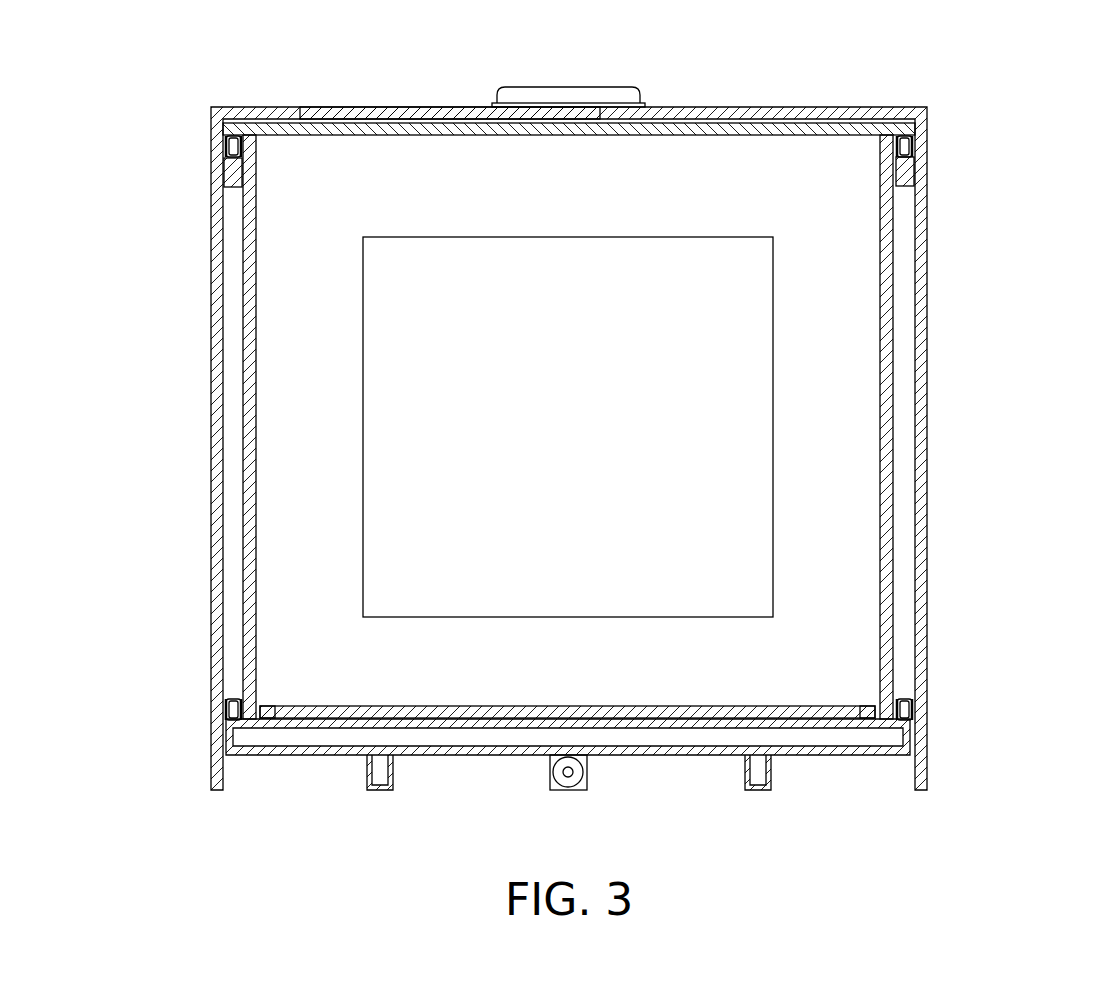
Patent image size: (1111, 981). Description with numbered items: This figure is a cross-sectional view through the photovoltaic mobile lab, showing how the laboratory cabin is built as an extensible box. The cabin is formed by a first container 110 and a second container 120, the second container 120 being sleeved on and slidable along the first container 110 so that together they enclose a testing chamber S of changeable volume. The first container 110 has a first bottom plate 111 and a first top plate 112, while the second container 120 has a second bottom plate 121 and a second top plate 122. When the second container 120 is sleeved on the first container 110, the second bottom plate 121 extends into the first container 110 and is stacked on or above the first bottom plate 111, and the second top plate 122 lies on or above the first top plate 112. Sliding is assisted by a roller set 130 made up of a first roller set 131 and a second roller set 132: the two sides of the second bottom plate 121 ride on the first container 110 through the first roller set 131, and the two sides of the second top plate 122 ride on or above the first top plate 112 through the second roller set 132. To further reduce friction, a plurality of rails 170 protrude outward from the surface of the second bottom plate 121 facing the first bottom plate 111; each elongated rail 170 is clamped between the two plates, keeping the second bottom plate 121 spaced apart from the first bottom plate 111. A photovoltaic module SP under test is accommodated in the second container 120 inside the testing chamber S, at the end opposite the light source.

The testing chamber S is at (330, 180).
The photovoltaic module SP is at (428, 427).
The first container 110 is at (244, 289).
The first bottom plate 111 is at (690, 727).
The first top plate 112 is at (721, 128).
The second container 120 is at (210, 222).
The second bottom plate 121 is at (663, 712).
The second top plate 122 is at (430, 113).
The roller set 130 is at (613, 429).
The first roller set 131 is at (228, 713).
The second roller set 132 is at (230, 145).
The rail 170 is at (270, 720).